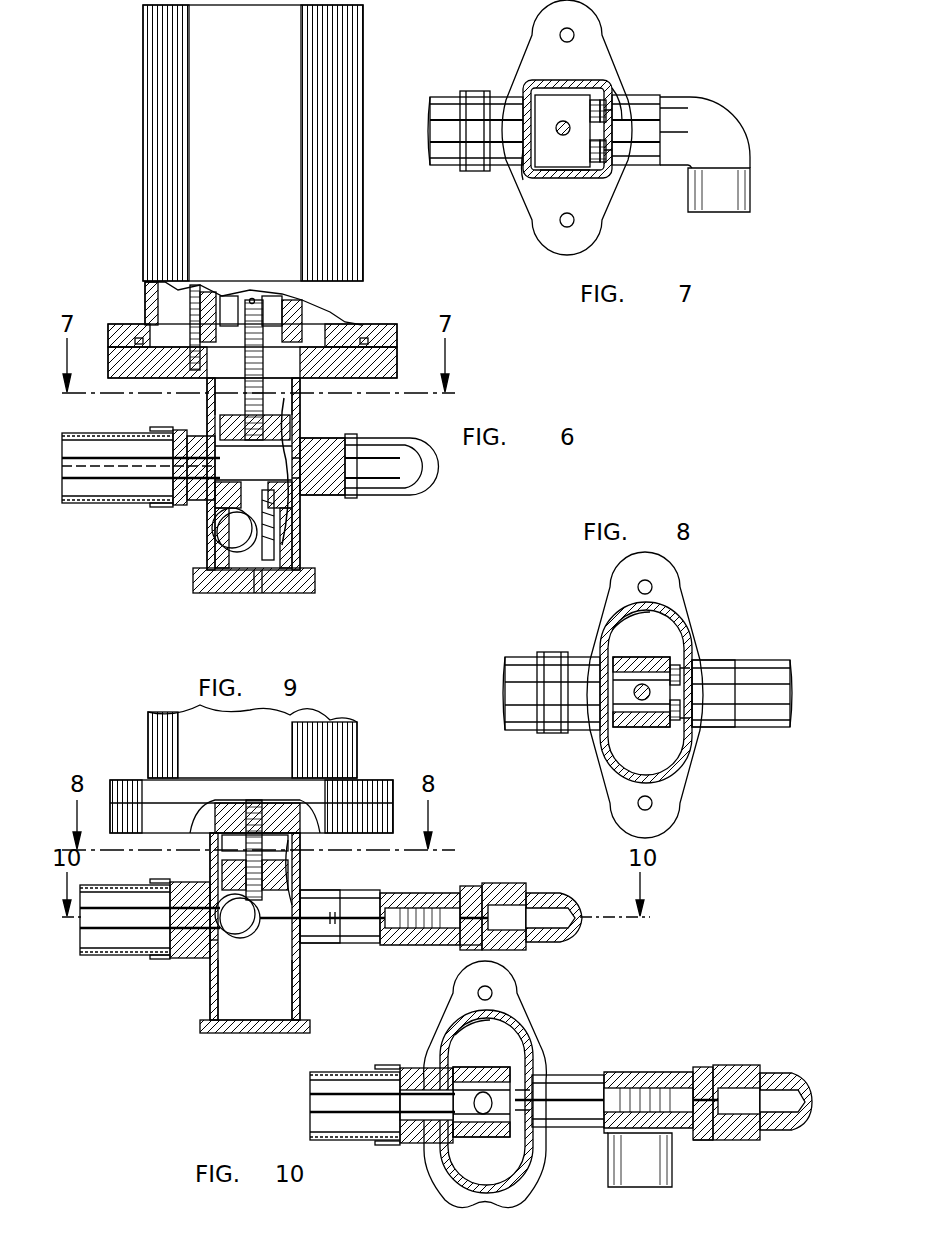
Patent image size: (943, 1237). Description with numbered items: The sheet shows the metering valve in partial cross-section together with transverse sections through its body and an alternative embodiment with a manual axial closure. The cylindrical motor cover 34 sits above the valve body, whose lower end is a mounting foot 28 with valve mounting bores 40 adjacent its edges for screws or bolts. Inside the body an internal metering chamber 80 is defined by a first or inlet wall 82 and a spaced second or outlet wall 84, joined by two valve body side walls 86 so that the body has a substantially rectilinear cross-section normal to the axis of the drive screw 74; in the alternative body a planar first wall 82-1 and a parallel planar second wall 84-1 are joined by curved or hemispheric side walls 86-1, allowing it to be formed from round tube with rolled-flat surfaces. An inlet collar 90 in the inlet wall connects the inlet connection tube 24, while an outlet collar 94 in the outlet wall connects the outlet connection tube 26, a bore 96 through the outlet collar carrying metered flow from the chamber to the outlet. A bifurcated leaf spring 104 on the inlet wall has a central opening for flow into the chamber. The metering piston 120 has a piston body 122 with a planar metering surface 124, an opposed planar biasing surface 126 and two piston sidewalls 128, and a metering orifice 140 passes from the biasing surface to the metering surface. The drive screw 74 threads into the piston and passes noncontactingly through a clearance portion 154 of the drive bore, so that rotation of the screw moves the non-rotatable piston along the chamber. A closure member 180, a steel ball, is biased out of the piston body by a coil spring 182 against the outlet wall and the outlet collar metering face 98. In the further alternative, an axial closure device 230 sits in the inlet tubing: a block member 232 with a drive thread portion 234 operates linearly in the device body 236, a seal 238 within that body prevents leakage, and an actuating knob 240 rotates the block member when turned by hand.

In FIG. 6, the inlet connection tube 24 is at (393, 492).
In FIG. 7, the inlet connection tube 24 is at (730, 118).
In FIG. 9, the inlet connection tube 24 is at (380, 895).
In FIG. 6, the outlet connection tube 26 is at (94, 434).
In FIG. 7, the outlet connection tube 26 is at (442, 168).
In FIG. 8, the outlet connection tube 26 is at (522, 660).
In FIG. 10, the outlet connection tube 26 is at (312, 1088).
In FIG. 6, the mounting foot 28 is at (193, 585).
In FIG. 7, the mounting foot 28 is at (515, 62).
In FIG. 6, the cylindrical motor cover 34 is at (143, 87).
In FIG. 7, the valve mounting bores 40 is at (574, 36).
In FIG. 6, the drive screw 74 is at (275, 303).
In FIG. 9, the drive screw 74 is at (295, 858).
In FIG. 6, the internal metering chamber 80 is at (245, 394).
In FIG. 9, the internal metering chamber 80 is at (276, 1012).
In FIG. 6, the first or inlet wall 82 is at (300, 552).
In FIG. 7, the first or inlet wall 82 is at (615, 88).
In FIG. 8, the planar first wall 82-1 is at (695, 660).
In FIG. 9, the planar first wall 82-1 is at (300, 975).
In FIG. 10, the planar first wall 82-1 is at (532, 1060).
In FIG. 6, the second or outlet wall 84 is at (195, 500).
In FIG. 7, the second or outlet wall 84 is at (548, 178).
In FIG. 8, the planar second wall 84-1 is at (578, 660).
In FIG. 9, the planar second wall 84-1 is at (212, 995).
In FIG. 10, the planar second wall 84-1 is at (430, 1068).
In FIG. 7, the valve body side walls 86 is at (598, 78).
In FIG. 8, the curved or hemispheric side walls 86-1 is at (655, 610).
In FIG. 10, the curved or hemispheric side walls 86-1 is at (518, 1022).
In FIG. 6, the inlet collar 90 is at (318, 440).
In FIG. 7, the inlet collar 90 is at (640, 96).
In FIG. 6, the outlet collar 94 is at (180, 502).
In FIG. 7, the outlet collar 94 is at (500, 94).
In FIG. 9, the outlet collar 94 is at (178, 895).
In FIG. 10, the outlet collar 94 is at (402, 1072).
In FIG. 6, the bore 96 is at (140, 470).
In FIG. 9, the bore 96 is at (150, 920).
In FIG. 6, the outlet collar metering face 98 is at (253, 507).
In FIG. 6, the bifurcated leaf spring 104 is at (302, 500).
In FIG. 7, the bifurcated leaf spring 104 is at (606, 180).
In FIG. 8, the bifurcated leaf spring 104 is at (762, 722).
In FIG. 10, the bifurcated leaf spring 104 is at (540, 1172).
In FIG. 7, the metering piston 120 is at (548, 100).
In FIG. 8, the metering piston 120 is at (655, 728).
In FIG. 9, the metering piston 120 is at (240, 808).
In FIG. 10, the metering piston 120 is at (480, 1138).
In FIG. 6, the piston body 122 is at (290, 425).
In FIG. 6, the planar metering surface 124 is at (215, 432).
In FIG. 7, the planar metering surface 124 is at (535, 140).
In FIG. 8, the planar metering surface 124 is at (600, 705).
In FIG. 7, the planar biasing surface 126 is at (620, 150).
In FIG. 8, the planar biasing surface 126 is at (686, 733).
In FIG. 8, the piston sidewalls 128 is at (655, 650).
In FIG. 10, the piston sidewalls 128 is at (495, 1070).
In FIG. 6, the metering orifice 140 is at (352, 446).
In FIG. 9, the metering orifice 140 is at (232, 848).
In FIG. 6, the clearance portion 154 is at (258, 592).
In FIG. 6, the closure member 180 is at (222, 536).
In FIG. 9, the closure member 180 is at (225, 925).
In FIG. 6, the coil spring 182 is at (300, 542).
In FIG. 9, the axial closure device 230 is at (468, 886).
In FIG. 10, the axial closure device 230 is at (700, 1067).
In FIG. 9, the block member 232 is at (360, 908).
In FIG. 10, the block member 232 is at (596, 1128).
In FIG. 9, the drive thread portion 234 is at (470, 950).
In FIG. 10, the drive thread portion 234 is at (695, 1140).
In FIG. 9, the device body 236 is at (435, 894).
In FIG. 10, the device body 236 is at (642, 1082).
In FIG. 9, the seal 238 is at (500, 884).
In FIG. 10, the seal 238 is at (735, 1066).
In FIG. 9, the actuating knob 240 is at (568, 942).
In FIG. 10, the actuating knob 240 is at (780, 1130).